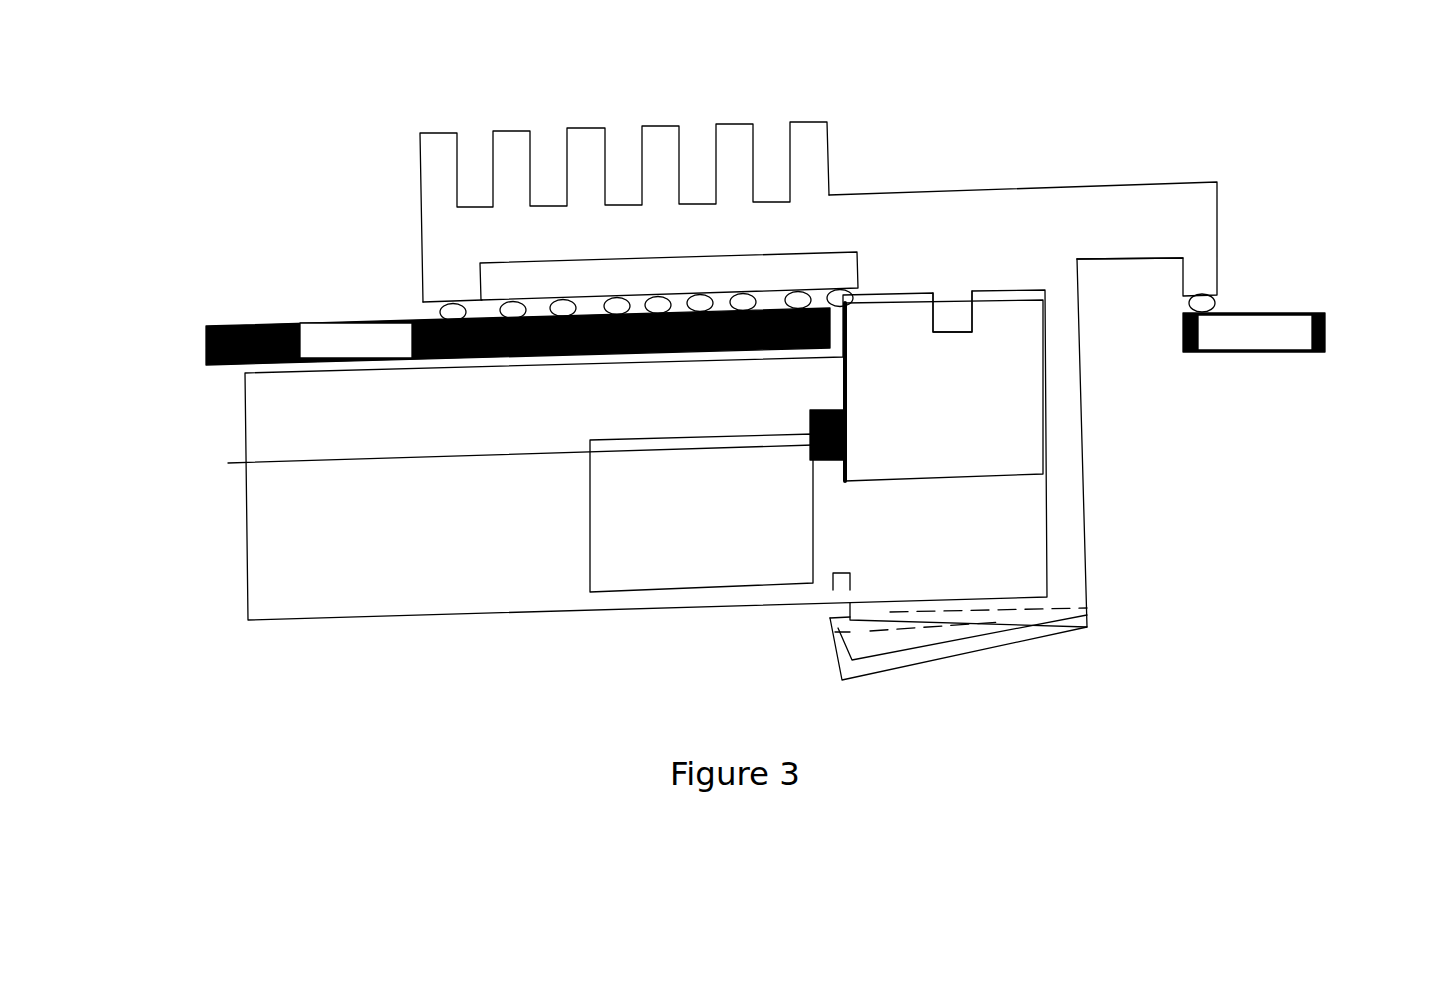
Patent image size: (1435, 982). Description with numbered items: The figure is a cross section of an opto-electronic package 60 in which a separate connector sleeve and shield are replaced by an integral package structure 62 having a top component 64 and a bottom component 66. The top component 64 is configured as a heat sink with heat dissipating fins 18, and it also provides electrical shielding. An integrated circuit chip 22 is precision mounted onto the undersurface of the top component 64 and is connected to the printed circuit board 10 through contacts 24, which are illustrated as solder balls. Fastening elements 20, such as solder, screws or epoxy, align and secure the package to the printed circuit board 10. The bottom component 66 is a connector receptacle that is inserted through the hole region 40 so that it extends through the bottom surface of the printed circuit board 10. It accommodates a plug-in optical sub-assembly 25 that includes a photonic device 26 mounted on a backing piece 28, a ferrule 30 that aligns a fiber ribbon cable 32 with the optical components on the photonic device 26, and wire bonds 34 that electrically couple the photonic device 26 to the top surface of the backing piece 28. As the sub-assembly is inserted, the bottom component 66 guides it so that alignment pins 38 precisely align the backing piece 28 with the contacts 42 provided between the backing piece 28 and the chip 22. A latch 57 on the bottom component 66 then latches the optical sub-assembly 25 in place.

The printed circuit board 10 is at (205, 343).
The heat dissipating fins 18 is at (512, 131).
The fastening elements 20 is at (437, 312).
The integrated circuit chip 22 is at (659, 288).
The contacts 24 is at (482, 300).
The optical sub-assembly 25 is at (380, 620).
The photonic device 26 is at (826, 462).
The backing piece 28 is at (942, 444).
The ferrule 30 is at (689, 540).
The fiber ribbon cable 32 is at (375, 462).
The wire bonds 34 is at (808, 418).
The alignment pins 38 is at (952, 311).
The hole region 40 is at (1112, 337).
The contacts 42 is at (848, 298).
The latch 57 is at (928, 662).
The opto-electronic package 60 is at (308, 731).
The integral package structure 62 is at (1070, 186).
The top component 64 is at (1076, 244).
The bottom component 66 is at (1088, 485).